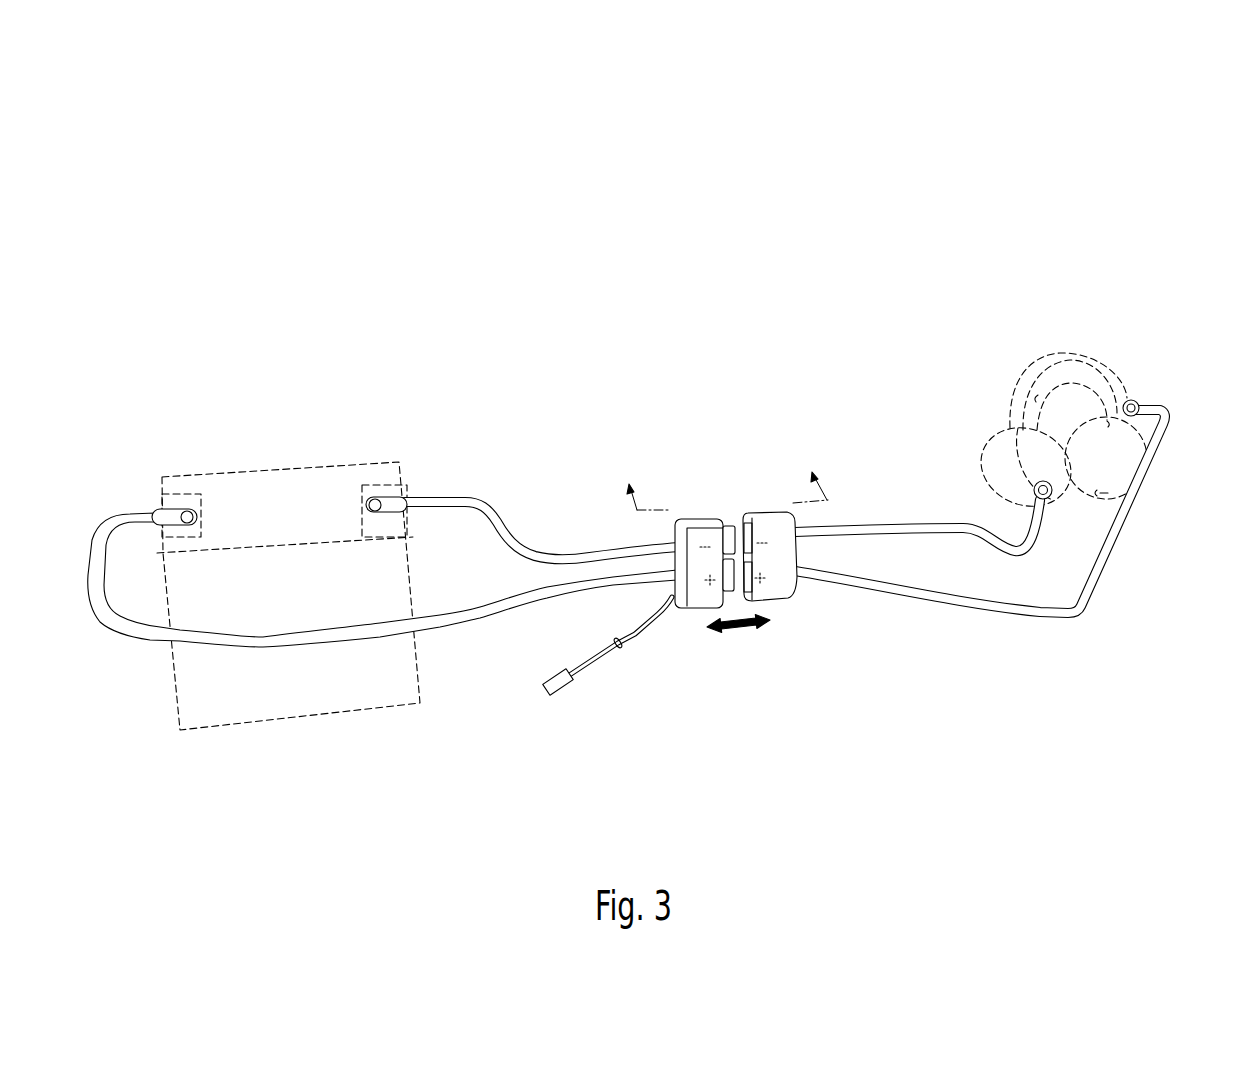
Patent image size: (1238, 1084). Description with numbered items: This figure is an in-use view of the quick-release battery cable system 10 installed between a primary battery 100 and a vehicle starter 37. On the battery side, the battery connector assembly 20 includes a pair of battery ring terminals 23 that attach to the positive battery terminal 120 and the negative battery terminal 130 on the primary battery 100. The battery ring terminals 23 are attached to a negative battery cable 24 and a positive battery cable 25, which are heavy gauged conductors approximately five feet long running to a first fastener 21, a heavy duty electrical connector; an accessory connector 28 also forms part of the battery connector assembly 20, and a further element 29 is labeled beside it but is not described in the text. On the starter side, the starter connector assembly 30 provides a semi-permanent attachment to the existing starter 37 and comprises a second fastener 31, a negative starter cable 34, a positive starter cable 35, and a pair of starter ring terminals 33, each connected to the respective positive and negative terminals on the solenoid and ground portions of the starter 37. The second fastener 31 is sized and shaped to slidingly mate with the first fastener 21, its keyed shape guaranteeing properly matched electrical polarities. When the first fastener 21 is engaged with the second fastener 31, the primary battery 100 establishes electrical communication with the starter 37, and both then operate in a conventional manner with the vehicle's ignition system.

The quick-release battery cable system 10 is at (170, 198).
The battery connector assembly 20 is at (562, 442).
The first fastener 21 is at (690, 538).
The battery ring terminals 23 is at (165, 514).
The negative battery cable 24 is at (583, 553).
The positive battery cable 25 is at (485, 610).
The accessory connector 28 is at (553, 689).
The auxiliary cable 29 is at (607, 652).
The starter connector assembly 30 is at (893, 654).
The second fastener 31 is at (775, 578).
The starter ring terminals 33 is at (1033, 507).
The negative starter cable 34 is at (933, 530).
The positive starter cable 35 is at (1075, 613).
The starter 37 is at (1105, 470).
The primary battery 100 is at (258, 712).
The positive battery terminal 120 is at (187, 493).
The negative battery terminal 130 is at (371, 487).